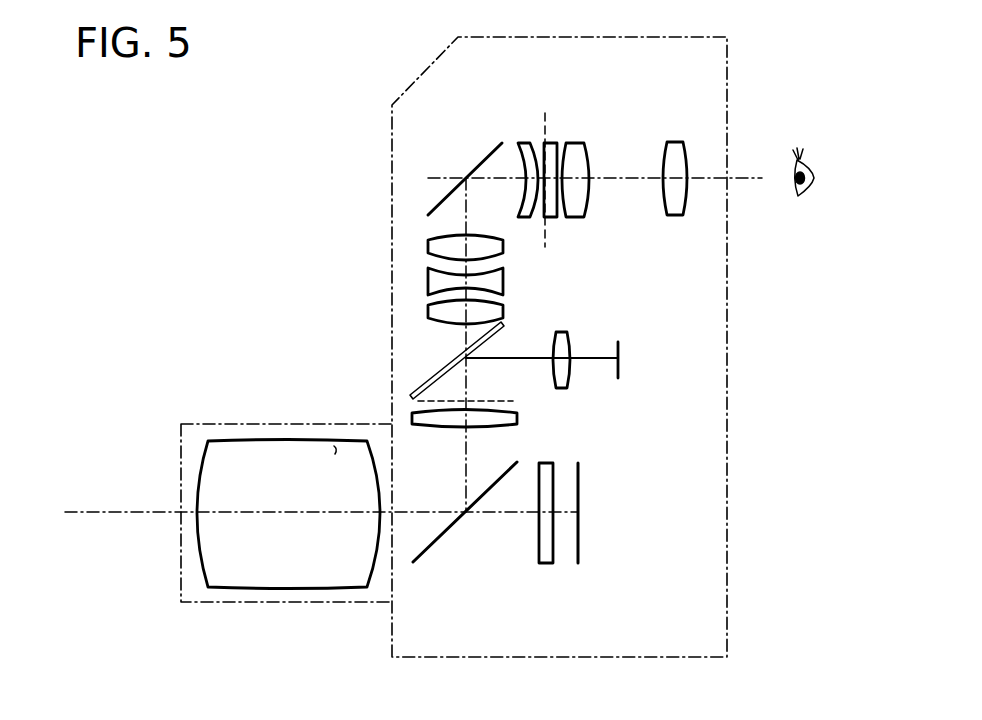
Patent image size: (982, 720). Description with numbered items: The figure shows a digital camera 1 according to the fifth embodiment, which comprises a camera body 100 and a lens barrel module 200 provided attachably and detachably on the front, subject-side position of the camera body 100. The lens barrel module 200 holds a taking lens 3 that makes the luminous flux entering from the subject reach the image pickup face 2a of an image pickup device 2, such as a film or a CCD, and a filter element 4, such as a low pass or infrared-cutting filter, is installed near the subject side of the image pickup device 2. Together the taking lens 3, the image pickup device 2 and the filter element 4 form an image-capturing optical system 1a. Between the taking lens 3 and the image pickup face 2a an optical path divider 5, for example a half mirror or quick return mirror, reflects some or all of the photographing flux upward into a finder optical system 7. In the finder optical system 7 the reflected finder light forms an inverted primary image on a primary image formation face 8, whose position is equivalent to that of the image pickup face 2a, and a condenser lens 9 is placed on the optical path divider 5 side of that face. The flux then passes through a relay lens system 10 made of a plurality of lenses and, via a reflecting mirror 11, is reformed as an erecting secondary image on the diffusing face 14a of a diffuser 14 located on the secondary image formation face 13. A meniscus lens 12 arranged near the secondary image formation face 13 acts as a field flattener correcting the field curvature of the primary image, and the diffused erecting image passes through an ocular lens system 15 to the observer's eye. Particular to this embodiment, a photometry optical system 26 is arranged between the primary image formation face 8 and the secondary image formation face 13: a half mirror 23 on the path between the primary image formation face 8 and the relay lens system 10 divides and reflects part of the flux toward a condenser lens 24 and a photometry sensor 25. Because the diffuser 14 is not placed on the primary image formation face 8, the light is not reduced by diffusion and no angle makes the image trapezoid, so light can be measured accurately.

The camera 1 is at (207, 302).
The image-capturing optical system 1a is at (460, 601).
The image pickup device 2 is at (600, 545).
The image pickup face 2a is at (572, 552).
The taking lens 3 is at (258, 441).
The filter element 4 is at (545, 565).
The optical path divider 5 is at (424, 552).
The finder optical system 7 is at (332, 186).
The primary image formation face 8 is at (513, 401).
The condenser lens 9 is at (490, 424).
The relay lens system 10 is at (410, 235).
The reflecting mirror 11 is at (450, 190).
The meniscus lens 12 is at (517, 157).
The secondary image formation face 13 is at (545, 113).
The diffuser 14 is at (565, 142).
The diffusing face 14a is at (543, 152).
The ocular lens system 15 is at (683, 156).
The half mirror 23 is at (421, 386).
The condenser lens 24 is at (556, 332).
The photometry sensor 25 is at (625, 327).
The photometry optical system 26 is at (557, 313).
The camera body 100 is at (727, 355).
The lens barrel module 200 is at (181, 453).